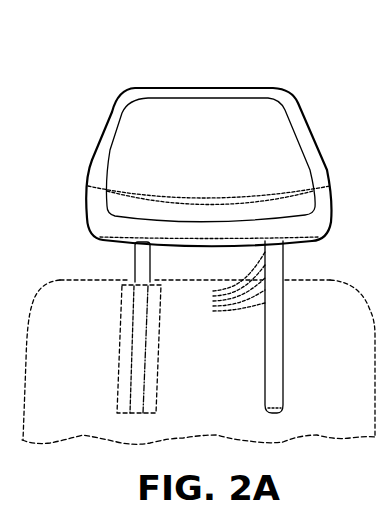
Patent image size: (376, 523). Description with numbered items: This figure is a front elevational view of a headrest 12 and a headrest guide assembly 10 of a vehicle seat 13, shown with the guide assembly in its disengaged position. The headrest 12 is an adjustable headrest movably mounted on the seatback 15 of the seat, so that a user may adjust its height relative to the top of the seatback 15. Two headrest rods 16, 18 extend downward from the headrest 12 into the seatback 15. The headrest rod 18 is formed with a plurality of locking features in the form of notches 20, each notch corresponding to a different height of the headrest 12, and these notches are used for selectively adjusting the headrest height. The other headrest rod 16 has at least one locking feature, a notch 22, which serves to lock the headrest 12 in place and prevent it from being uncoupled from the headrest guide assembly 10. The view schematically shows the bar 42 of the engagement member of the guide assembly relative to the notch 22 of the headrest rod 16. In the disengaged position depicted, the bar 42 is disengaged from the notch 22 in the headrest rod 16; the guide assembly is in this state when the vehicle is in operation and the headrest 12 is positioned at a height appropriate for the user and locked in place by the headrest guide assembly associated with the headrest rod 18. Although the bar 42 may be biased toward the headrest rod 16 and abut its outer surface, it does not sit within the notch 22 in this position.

The headrest guide assembly 10 is at (120, 343).
The headrest 12 is at (234, 87).
The vehicle seat 13 is at (128, 72).
The seatback 15 is at (83, 280).
The headrest rod 16 is at (133, 261).
The headrest rod 18 is at (283, 318).
The notches 20 is at (225, 284).
The notch 22 is at (145, 308).
The bar 42 is at (162, 289).